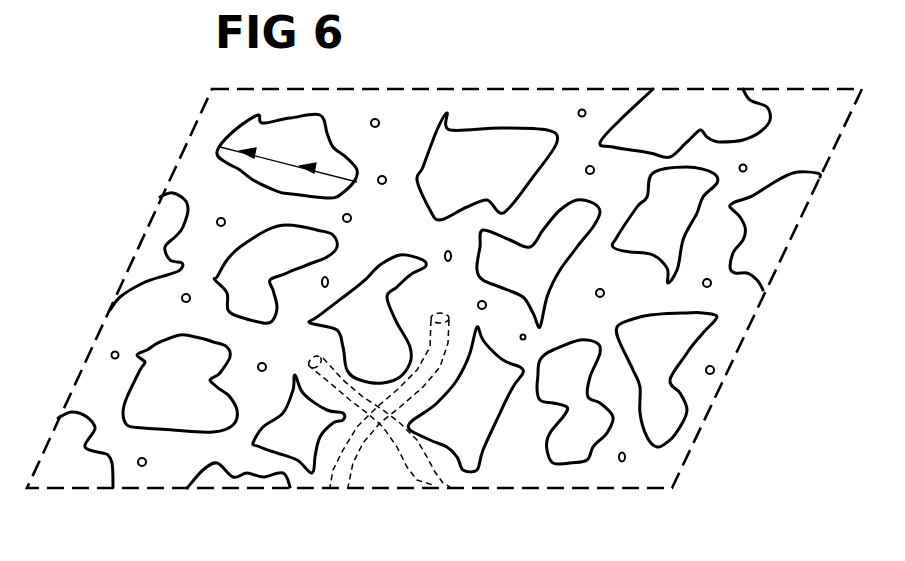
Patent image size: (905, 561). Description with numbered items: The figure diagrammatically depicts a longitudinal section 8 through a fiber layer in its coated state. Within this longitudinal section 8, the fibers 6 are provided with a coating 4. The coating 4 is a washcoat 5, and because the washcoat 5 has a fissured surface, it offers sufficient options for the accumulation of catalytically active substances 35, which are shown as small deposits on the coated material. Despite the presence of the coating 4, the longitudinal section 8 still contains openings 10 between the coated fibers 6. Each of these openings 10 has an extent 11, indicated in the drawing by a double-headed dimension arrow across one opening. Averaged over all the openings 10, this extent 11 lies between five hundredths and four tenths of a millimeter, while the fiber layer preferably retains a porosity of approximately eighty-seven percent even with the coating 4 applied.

The coating 4 is at (165, 470).
The washcoat 5 is at (795, 92).
The fibers 6 is at (315, 357).
The longitudinal section 8 is at (535, 88).
The openings 10 is at (500, 186).
The extent 11 is at (277, 158).
The catalytically active substances 35 is at (217, 219).